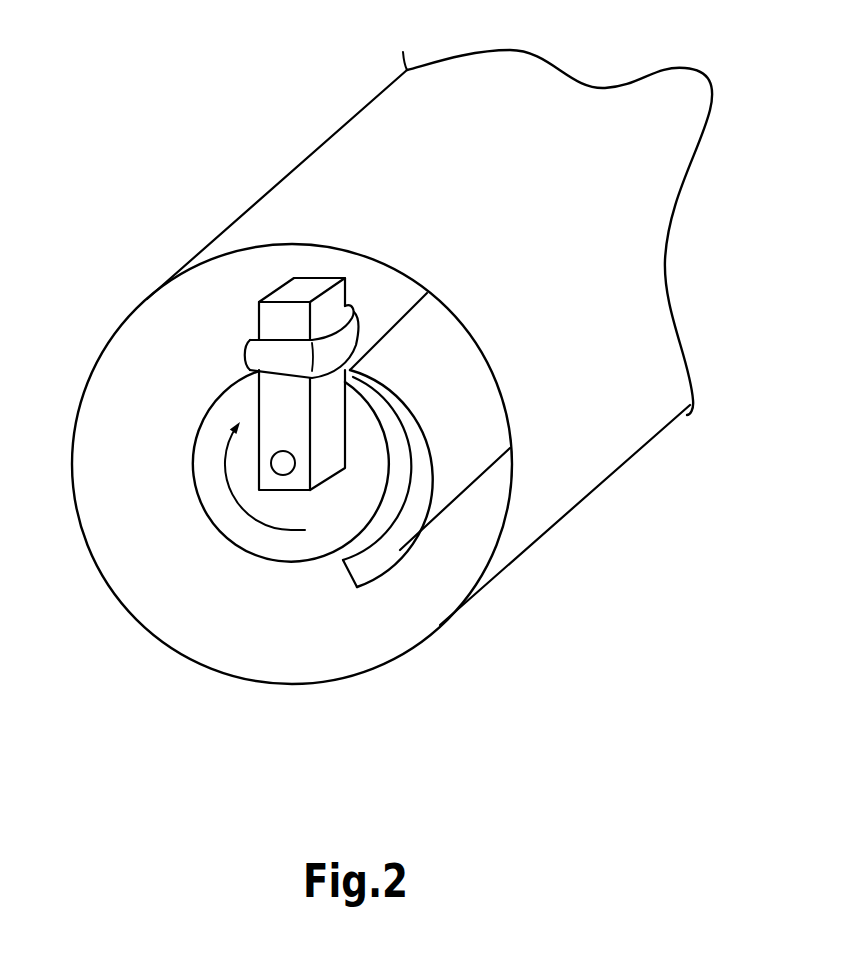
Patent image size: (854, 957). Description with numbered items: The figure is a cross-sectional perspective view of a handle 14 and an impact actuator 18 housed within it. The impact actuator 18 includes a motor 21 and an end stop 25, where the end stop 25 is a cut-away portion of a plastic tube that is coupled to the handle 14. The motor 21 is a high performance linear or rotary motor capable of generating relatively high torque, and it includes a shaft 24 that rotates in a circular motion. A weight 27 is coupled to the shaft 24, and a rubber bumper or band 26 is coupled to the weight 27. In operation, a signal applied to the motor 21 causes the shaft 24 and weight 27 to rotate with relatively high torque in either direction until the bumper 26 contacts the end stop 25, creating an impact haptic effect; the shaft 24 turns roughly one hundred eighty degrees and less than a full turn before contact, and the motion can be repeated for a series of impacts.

The handle 14 is at (144, 297).
The impact actuator 18 is at (213, 565).
The motor 21 is at (226, 500).
The shaft 24 is at (284, 484).
The end stop 25 is at (441, 348).
The rubber bumper or band 26 is at (248, 357).
The weight 27 is at (322, 279).